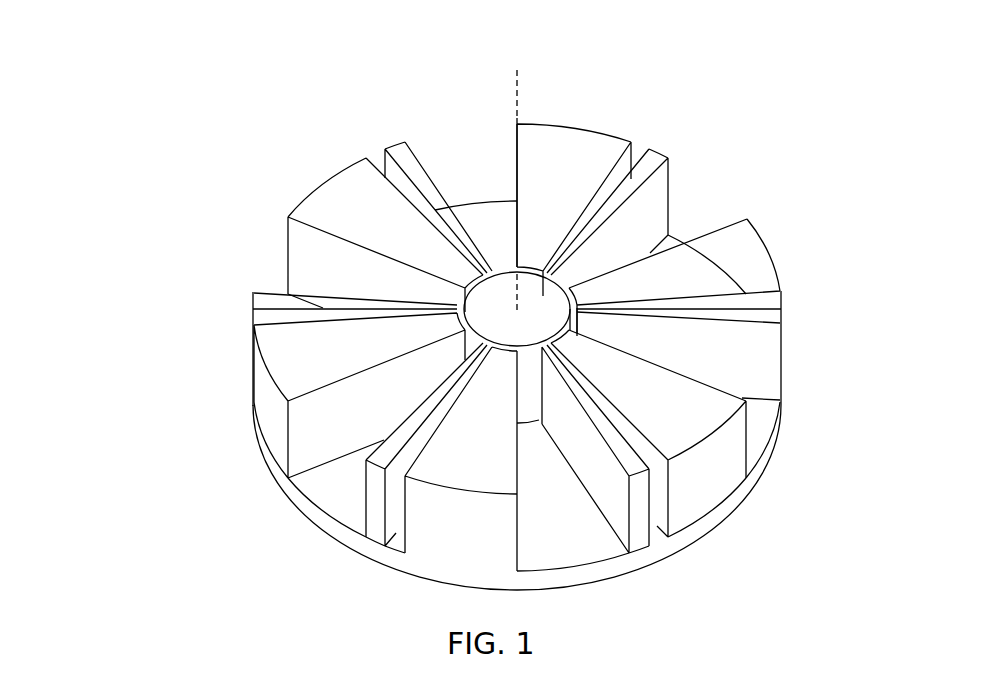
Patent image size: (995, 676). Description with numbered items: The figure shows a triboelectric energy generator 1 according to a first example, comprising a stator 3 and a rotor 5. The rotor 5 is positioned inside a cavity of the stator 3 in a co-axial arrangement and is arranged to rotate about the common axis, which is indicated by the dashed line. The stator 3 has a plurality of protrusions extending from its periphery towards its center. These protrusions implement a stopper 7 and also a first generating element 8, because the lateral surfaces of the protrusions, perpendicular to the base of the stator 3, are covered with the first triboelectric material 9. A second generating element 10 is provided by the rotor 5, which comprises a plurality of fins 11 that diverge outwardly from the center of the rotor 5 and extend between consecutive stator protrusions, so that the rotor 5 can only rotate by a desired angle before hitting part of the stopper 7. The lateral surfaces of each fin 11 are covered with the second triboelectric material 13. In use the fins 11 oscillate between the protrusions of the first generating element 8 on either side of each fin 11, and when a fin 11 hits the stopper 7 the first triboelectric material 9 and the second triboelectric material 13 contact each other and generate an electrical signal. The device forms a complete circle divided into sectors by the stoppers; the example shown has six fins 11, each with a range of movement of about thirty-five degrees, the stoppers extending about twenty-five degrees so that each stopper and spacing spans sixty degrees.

The triboelectric energy generator 1 is at (254, 131).
The stator 3 is at (593, 545).
The rotor 5 is at (541, 308).
The stopper 7 is at (722, 452).
The first generating element 8 is at (270, 429).
The first triboelectric material 9 is at (308, 433).
The second generating element 10 is at (367, 514).
The fin 11 is at (766, 315).
The second triboelectric material 13 is at (757, 358).